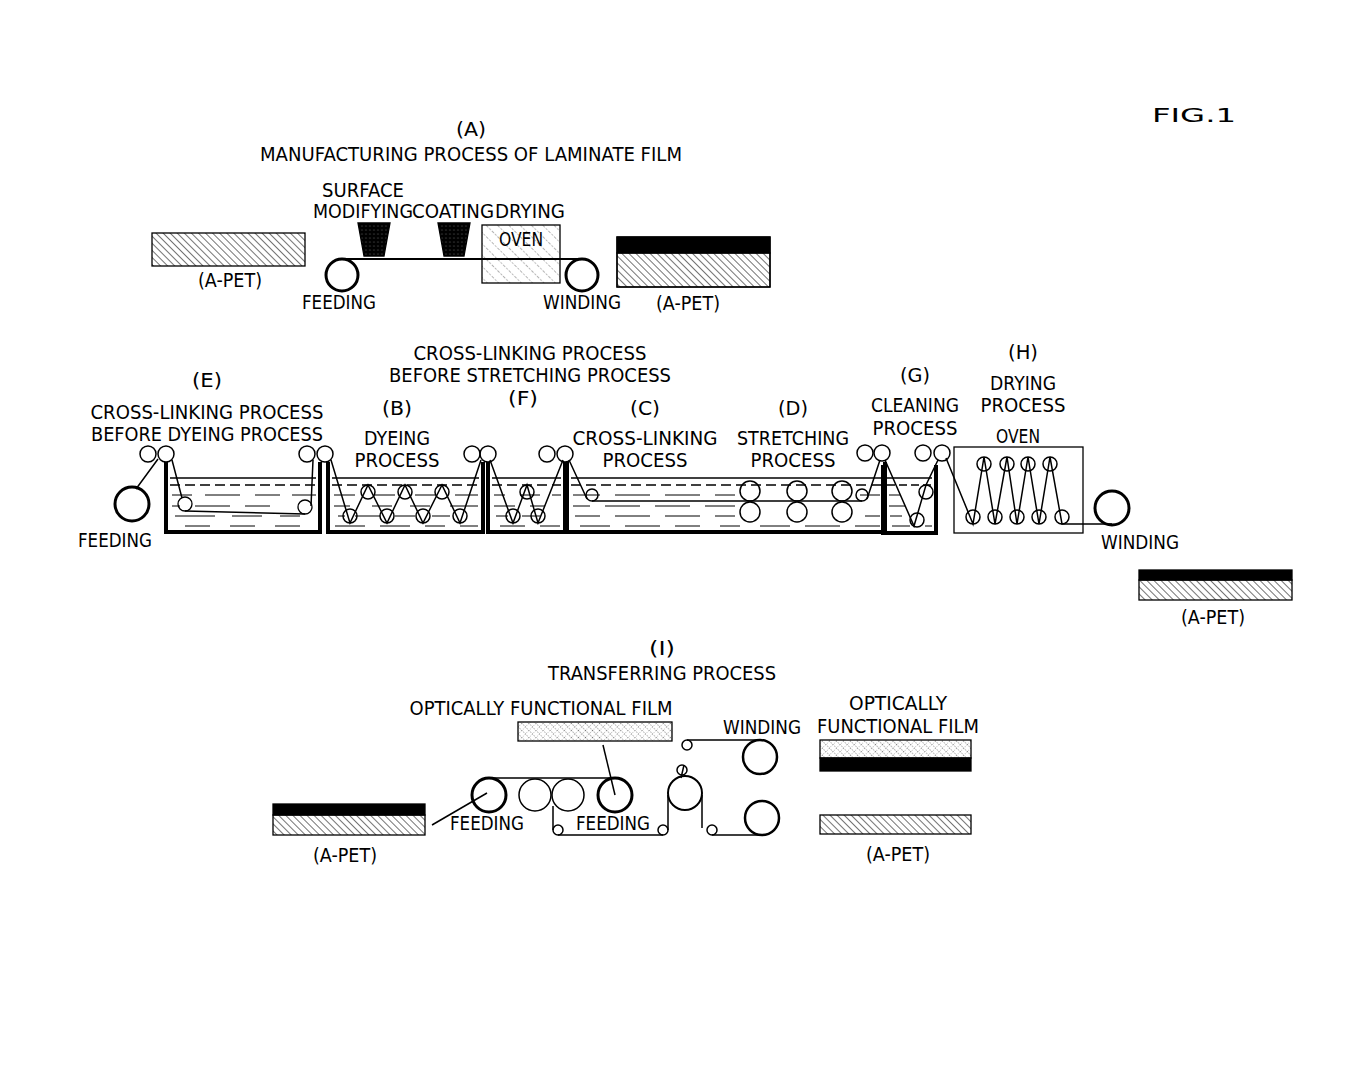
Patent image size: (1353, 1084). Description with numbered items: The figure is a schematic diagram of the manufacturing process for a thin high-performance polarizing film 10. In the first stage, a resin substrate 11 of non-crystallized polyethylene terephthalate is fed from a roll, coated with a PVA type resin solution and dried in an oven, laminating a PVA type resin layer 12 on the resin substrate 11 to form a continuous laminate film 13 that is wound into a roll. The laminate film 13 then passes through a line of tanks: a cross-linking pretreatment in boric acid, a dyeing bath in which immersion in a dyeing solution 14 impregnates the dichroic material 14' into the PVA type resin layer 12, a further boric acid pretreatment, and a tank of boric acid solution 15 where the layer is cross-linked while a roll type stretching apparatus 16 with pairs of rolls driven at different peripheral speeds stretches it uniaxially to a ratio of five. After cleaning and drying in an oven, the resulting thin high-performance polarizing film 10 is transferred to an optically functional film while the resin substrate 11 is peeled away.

The thin high-performance polarizing film 10 is at (1139, 575).
The resin substrate 11 is at (147, 210).
The PVA type resin layer 12 is at (607, 215).
The laminate film 13 is at (820, 212).
The dyeing solution 14 is at (423, 537).
The dichroic material 14' is at (407, 557).
The boric acid solution 15 is at (590, 525).
The roll stretching apparatus 16 is at (743, 545).